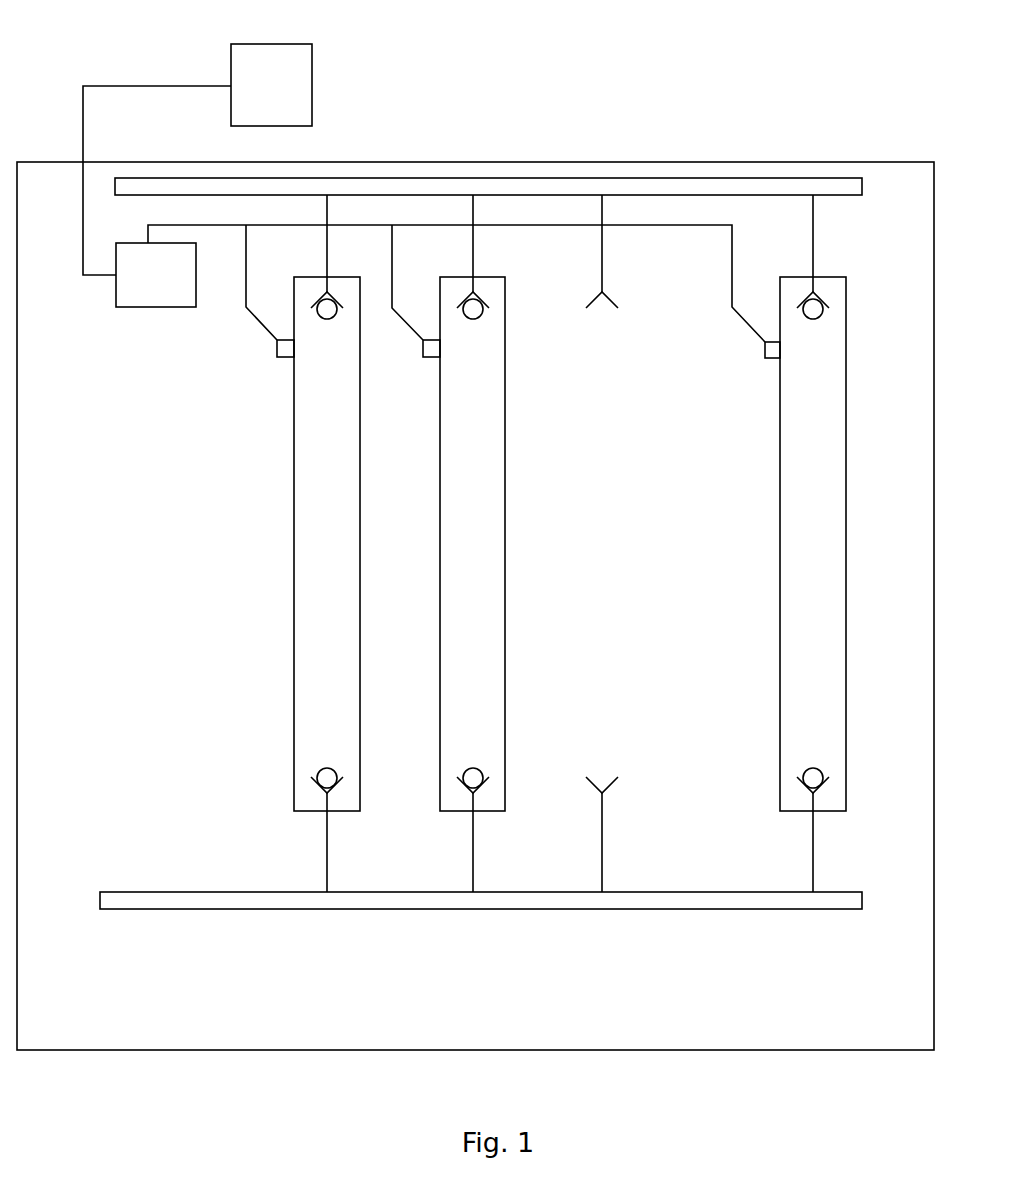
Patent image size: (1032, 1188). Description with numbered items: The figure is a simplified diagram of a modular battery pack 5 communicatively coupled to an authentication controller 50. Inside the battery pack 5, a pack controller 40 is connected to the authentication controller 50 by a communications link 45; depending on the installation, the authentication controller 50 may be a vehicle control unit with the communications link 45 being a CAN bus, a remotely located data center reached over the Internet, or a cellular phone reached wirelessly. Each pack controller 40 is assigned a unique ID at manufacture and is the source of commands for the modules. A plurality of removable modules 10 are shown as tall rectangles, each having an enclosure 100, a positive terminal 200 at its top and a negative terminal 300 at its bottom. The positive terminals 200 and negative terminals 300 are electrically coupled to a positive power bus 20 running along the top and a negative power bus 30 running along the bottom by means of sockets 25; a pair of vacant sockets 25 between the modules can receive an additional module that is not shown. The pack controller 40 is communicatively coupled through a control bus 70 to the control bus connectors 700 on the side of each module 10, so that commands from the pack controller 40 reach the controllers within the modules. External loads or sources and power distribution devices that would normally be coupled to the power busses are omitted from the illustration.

The battery pack 5 is at (837, 162).
The removable module 10 is at (562, 544).
The positive power bus 20 is at (687, 177).
The vacant socket 25 is at (608, 301).
The negative power bus 30 is at (250, 908).
The pack controller 40 is at (155, 287).
The communications link 45 is at (197, 86).
The authentication controller 50 is at (313, 97).
The control bus 70 is at (513, 225).
The enclosure 100 is at (836, 530).
The positive terminal 200 is at (818, 317).
The negative terminal 300 is at (822, 770).
The control bus connector 700 is at (285, 358).